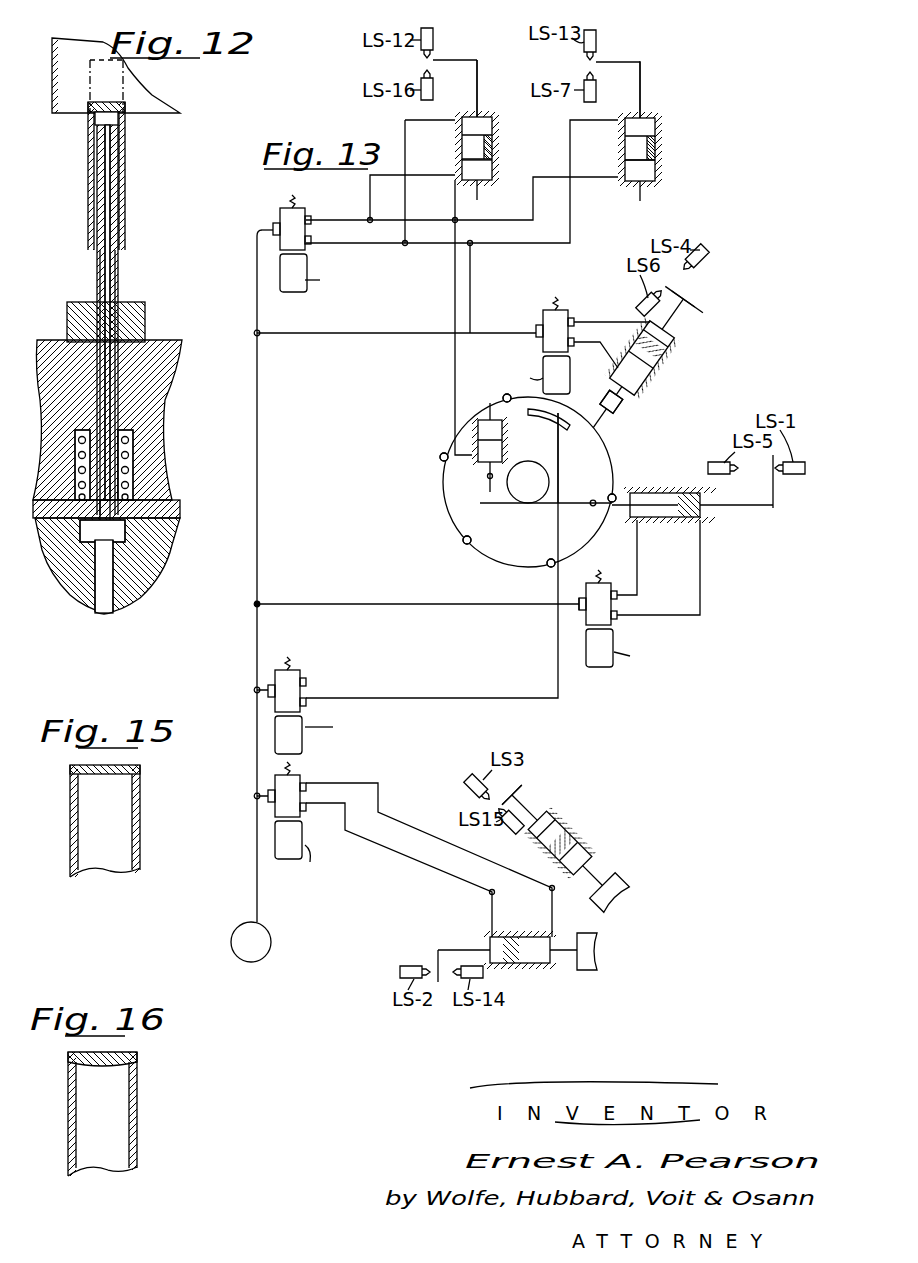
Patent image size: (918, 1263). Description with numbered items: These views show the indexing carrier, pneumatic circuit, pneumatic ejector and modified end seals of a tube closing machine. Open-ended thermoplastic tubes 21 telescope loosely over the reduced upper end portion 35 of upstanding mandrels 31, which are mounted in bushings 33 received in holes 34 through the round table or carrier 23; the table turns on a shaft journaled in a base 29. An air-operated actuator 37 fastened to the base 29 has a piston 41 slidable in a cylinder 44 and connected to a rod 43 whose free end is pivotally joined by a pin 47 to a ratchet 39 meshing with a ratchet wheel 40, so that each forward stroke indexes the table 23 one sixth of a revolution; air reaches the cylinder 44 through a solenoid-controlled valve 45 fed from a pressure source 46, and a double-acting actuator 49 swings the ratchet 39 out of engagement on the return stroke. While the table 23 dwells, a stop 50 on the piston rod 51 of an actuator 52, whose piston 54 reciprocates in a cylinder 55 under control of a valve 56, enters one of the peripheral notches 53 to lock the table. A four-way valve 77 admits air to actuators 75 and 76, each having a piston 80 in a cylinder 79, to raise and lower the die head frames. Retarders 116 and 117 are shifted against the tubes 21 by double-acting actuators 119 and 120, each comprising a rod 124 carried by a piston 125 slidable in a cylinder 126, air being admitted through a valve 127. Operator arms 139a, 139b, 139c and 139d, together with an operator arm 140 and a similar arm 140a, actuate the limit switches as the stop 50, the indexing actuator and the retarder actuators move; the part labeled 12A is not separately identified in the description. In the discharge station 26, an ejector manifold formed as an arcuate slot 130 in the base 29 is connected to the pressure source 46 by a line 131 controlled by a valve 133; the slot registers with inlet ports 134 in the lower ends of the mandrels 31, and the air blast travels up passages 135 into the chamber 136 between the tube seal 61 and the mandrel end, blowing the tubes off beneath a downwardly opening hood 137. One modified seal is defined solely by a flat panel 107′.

In FIG. 12, the hood 137 is at (52, 112).
In FIG. 12, the seal 61 is at (125, 108).
In FIG. 12, the chamber 136 is at (116, 120).
In FIG. 12, the discharge station 26 is at (50, 198).
In FIG. 12, the tube 21 is at (125, 197).
In FIG. 15, the tube 21 is at (70, 826).
In FIG. 16, the tube 21 is at (68, 1122).
In FIG. 12, the reduced upper end portion 35 is at (110, 225).
In FIG. 12, the passage 135 is at (100, 279).
In FIG. 12, the mandrel 31 is at (118, 280).
In FIG. 12, the carrier 23 is at (165, 345).
In FIG. 13, the carrier 23 is at (598, 458).
In FIG. 12, the bushing 33 is at (82, 362).
In FIG. 12, the hole 34 is at (133, 480).
In FIG. 12, the inlet port 134 is at (114, 534).
In FIG. 12, the manifold 130 is at (95, 560).
In FIG. 13, the manifold 130 is at (543, 426).
In FIG. 12, the base 29 is at (130, 570).
In FIG. 12, the line 131 is at (100, 598).
In FIG. 13, the line 131 is at (560, 634).
In FIG. 13, the operator arm 140 is at (451, 62).
In FIG. 13, the actuator stem 140a is at (640, 60).
In FIG. 13, the fluid-operated actuator 75 is at (502, 139).
In FIG. 13, the piston 80 is at (500, 153).
In FIG. 13, the cylinder 79 is at (492, 178).
In FIG. 13, the fluid-operated actuator 76 is at (668, 135).
In FIG. 13, the four-way valve 77 is at (280, 220).
In FIG. 13, the valve 56 is at (543, 320).
In FIG. 13, the double-acting pneumatic actuator 49 is at (490, 410).
In FIG. 13, the notch 53 is at (444, 462).
In FIG. 13, the ratchet wheel 40 is at (510, 475).
In FIG. 13, the ratchet 39 is at (512, 504).
In FIG. 13, the pin 47 is at (593, 500).
In FIG. 13, the actuator 52 is at (680, 350).
In FIG. 13, the cylinder 55 is at (672, 366).
In FIG. 13, the piston 54 is at (660, 383).
In FIG. 13, the piston rod 51 is at (622, 402).
In FIG. 13, the stop 50 is at (610, 412).
In FIG. 13, the operator arm 139a is at (688, 296).
In FIG. 13, the air-operated actuator 37 is at (679, 484).
In FIG. 13, the piston 41 is at (688, 520).
In FIG. 13, the rod 43 is at (627, 520).
In FIG. 13, the cylinder 44 is at (658, 520).
In FIG. 13, the operator arm 139b is at (773, 495).
In FIG. 13, the valve 45 is at (616, 630).
In FIG. 13, the valve 133 is at (290, 676).
In FIG. 13, the valve 127 is at (290, 782).
In FIG. 13, the pressure source 46 is at (265, 935).
In FIG. 13, the double-acting pneumatic actuator 120 is at (583, 822).
In FIG. 13, the cylinder 126 is at (590, 855).
In FIG. 13, the piston 125 is at (556, 845).
In FIG. 13, the rod 124 is at (598, 884).
In FIG. 13, the retarder 117 is at (637, 888).
In FIG. 13, the operator arm 139d is at (513, 793).
In FIG. 13, the cylinder 12A is at (483, 945).
In FIG. 13, the operator arm 139c is at (438, 950).
In FIG. 13, the retarder 116 is at (603, 968).
In FIG. 13, the double-acting pneumatic actuator 119 is at (523, 976).
In FIG. 15, the flat panel 107′ is at (128, 764).